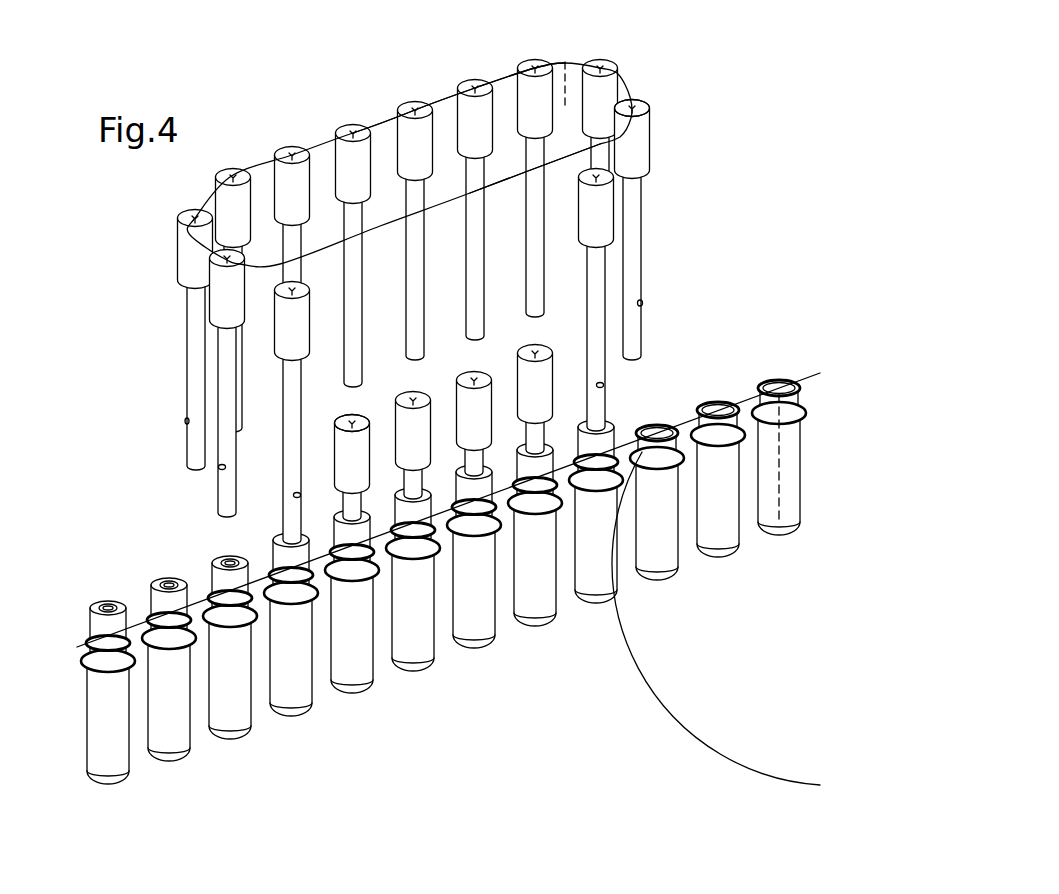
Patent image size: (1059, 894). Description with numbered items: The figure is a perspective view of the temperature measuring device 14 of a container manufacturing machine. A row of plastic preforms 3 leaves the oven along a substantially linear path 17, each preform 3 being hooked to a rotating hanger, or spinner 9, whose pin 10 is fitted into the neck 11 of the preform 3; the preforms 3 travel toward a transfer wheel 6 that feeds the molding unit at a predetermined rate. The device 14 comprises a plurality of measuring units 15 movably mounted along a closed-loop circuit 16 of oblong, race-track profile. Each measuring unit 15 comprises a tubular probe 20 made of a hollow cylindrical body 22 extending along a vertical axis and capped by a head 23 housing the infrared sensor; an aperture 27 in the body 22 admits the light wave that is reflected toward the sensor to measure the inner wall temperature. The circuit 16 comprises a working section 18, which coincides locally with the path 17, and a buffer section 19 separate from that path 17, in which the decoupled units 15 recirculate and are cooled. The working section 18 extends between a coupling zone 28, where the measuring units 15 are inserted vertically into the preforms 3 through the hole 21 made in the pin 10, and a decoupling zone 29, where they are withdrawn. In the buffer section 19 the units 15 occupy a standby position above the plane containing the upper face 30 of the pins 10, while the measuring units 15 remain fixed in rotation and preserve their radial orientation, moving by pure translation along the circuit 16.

The preform 3 is at (433, 576).
The transfer wheel 6 is at (684, 690).
The rotating hanger 9 is at (380, 576).
The pin 10 is at (100, 582).
The neck 11 is at (107, 666).
The device 14 is at (311, 130).
The measuring unit 15 is at (466, 277).
The closed-loop circuit 16 is at (382, 122).
The path 17 is at (229, 601).
The working section 18 is at (514, 200).
The buffer section 19 is at (493, 75).
The tubular probe 20 is at (461, 354).
The hole 21 is at (108, 603).
The hollow cylindrical body 22 is at (642, 213).
The head 23 is at (652, 146).
The aperture 27 is at (642, 303).
The coupling zone 28 is at (273, 538).
The decoupling zone 29 is at (609, 419).
The upper face 30 is at (121, 604).